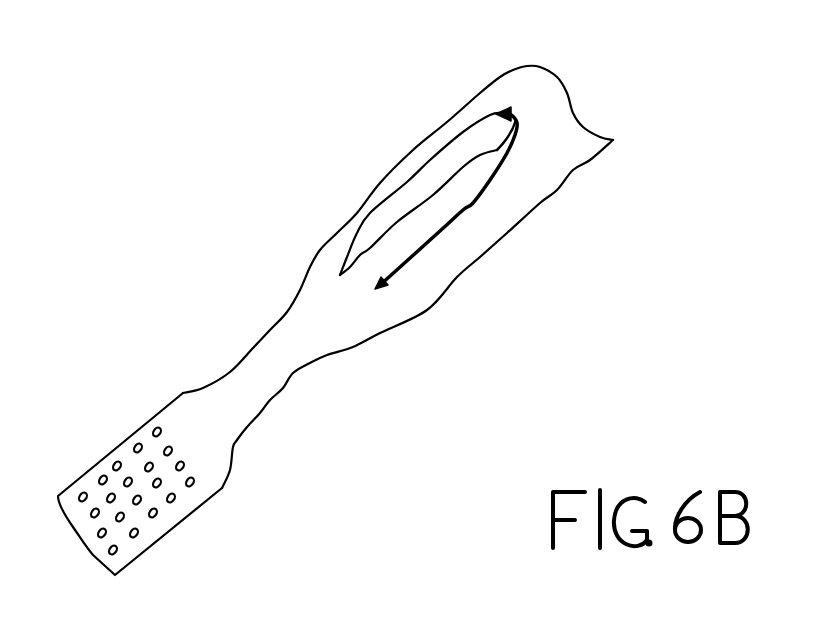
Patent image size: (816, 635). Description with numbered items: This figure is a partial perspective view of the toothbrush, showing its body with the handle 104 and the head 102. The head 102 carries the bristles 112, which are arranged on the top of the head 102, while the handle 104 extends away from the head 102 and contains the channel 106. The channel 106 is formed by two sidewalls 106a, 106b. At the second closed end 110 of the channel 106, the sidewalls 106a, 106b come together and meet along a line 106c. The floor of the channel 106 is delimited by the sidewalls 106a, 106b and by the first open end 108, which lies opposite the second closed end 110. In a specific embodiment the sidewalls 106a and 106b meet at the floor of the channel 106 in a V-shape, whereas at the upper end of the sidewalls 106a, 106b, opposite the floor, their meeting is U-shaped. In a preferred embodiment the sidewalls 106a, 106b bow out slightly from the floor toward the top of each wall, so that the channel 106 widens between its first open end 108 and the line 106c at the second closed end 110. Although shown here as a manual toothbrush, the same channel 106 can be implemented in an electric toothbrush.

The head 102 is at (62, 494).
The handle 104 is at (555, 190).
The channel 106 is at (453, 244).
The sidewall 106a is at (440, 218).
The sidewall 106b is at (378, 220).
The line 106c is at (514, 130).
The first open end 108 is at (355, 283).
The second closed end 110 is at (510, 125).
The bristles 112 is at (139, 536).